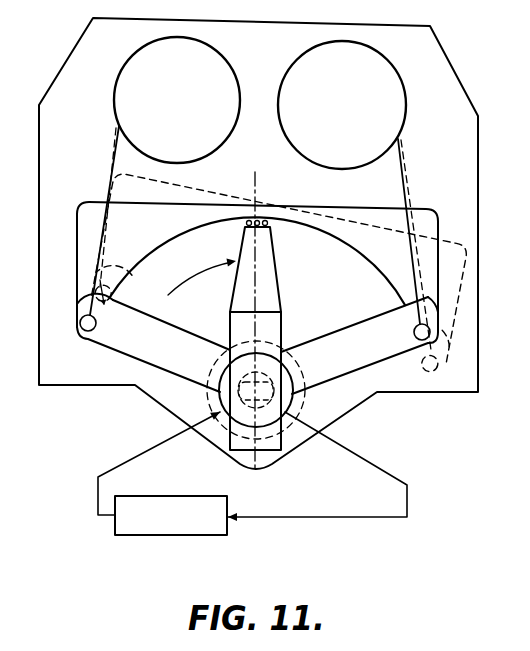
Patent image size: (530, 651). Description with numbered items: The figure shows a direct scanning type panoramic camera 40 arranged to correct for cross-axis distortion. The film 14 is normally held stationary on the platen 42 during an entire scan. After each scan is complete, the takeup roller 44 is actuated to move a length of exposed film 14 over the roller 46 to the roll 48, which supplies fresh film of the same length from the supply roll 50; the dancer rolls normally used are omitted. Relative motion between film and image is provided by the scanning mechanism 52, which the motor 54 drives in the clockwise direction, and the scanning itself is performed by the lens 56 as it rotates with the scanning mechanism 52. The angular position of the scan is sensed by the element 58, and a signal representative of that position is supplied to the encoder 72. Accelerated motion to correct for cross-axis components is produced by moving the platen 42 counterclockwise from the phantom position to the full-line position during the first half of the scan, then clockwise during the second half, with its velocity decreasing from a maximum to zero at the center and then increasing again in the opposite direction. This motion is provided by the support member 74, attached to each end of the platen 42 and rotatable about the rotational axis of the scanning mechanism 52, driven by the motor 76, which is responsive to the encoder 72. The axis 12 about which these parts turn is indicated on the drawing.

The axis of rotation 12 is at (255, 176).
The film 14 is at (378, 272).
The direct scanning type panoramic camera 40 is at (130, 407).
The platen 42 is at (340, 208).
The takeup roller 44 is at (85, 335).
The roller 46 is at (418, 320).
The roll 48 is at (227, 62).
The supply roll 50 is at (382, 58).
The scanning mechanism 52 is at (277, 281).
The motor 54 is at (306, 392).
The lens 56 is at (296, 368).
The element 58 is at (215, 372).
The encoder 72 is at (198, 537).
The support member 74 is at (174, 327).
The motor 76 is at (210, 398).